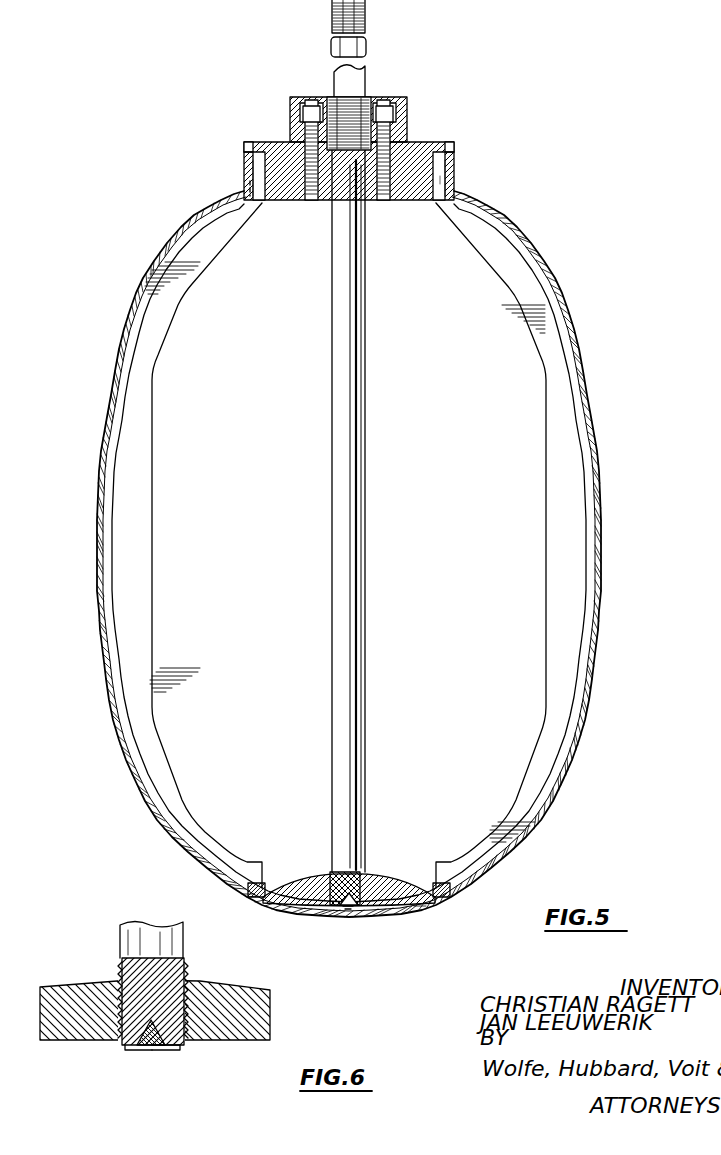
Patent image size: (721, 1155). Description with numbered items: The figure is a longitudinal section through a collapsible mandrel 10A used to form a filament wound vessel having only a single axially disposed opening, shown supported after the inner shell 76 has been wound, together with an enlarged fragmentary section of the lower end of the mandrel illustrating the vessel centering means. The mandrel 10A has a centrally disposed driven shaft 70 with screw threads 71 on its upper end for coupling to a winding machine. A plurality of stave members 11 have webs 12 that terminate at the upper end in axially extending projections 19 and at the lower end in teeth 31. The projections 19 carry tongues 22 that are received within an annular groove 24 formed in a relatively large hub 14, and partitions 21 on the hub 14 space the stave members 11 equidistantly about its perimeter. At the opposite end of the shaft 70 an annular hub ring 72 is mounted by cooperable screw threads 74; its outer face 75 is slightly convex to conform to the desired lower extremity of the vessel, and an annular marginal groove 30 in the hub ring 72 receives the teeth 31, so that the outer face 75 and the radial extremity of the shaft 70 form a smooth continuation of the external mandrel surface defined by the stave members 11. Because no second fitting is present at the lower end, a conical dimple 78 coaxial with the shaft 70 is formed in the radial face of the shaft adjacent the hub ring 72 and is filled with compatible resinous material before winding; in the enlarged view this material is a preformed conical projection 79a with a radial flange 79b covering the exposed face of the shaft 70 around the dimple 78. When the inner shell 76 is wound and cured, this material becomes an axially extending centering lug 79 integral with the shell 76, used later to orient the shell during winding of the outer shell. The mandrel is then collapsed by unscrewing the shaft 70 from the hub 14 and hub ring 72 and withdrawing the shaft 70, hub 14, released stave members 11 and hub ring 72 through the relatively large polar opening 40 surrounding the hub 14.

In FIG. 5, the collapsible mandrel 10A is at (436, 102).
In FIG. 5, the stave members 11 is at (110, 483).
In FIG. 5, the webs 12 is at (150, 433).
In FIG. 5, the hub 14 is at (421, 151).
In FIG. 5, the axially extending projections 19 is at (440, 181).
In FIG. 5, the partitions 21 is at (248, 179).
In FIG. 5, the tongues 22 is at (262, 150).
In FIG. 5, the annular groove 24 is at (448, 163).
In FIG. 5, the annular marginal groove 30 is at (268, 881).
In FIG. 5, the teeth 31 is at (441, 880).
In FIG. 5, the opening 40 is at (440, 206).
In FIG. 5, the driven shaft 70 is at (357, 408).
In FIG. 6, the driven shaft 70 is at (118, 942).
In FIG. 5, the screw threads 71 is at (366, 16).
In FIG. 5, the annular hub ring 72 is at (388, 876).
In FIG. 6, the annular hub ring 72 is at (240, 992).
In FIG. 5, the screw threads 74 is at (338, 871).
In FIG. 6, the screw threads 74 is at (178, 1000).
In FIG. 5, the outer face 75 is at (420, 908).
In FIG. 5, the inner shell 76 is at (574, 763).
In FIG. 5, the conical dimple 78 is at (356, 906).
In FIG. 6, the conical dimple 78 is at (151, 1030).
In FIG. 5, the centering lug 79 is at (347, 909).
In FIG. 6, the preformed conical projection 79a is at (165, 1049).
In FIG. 6, the radial flange 79b is at (126, 1051).